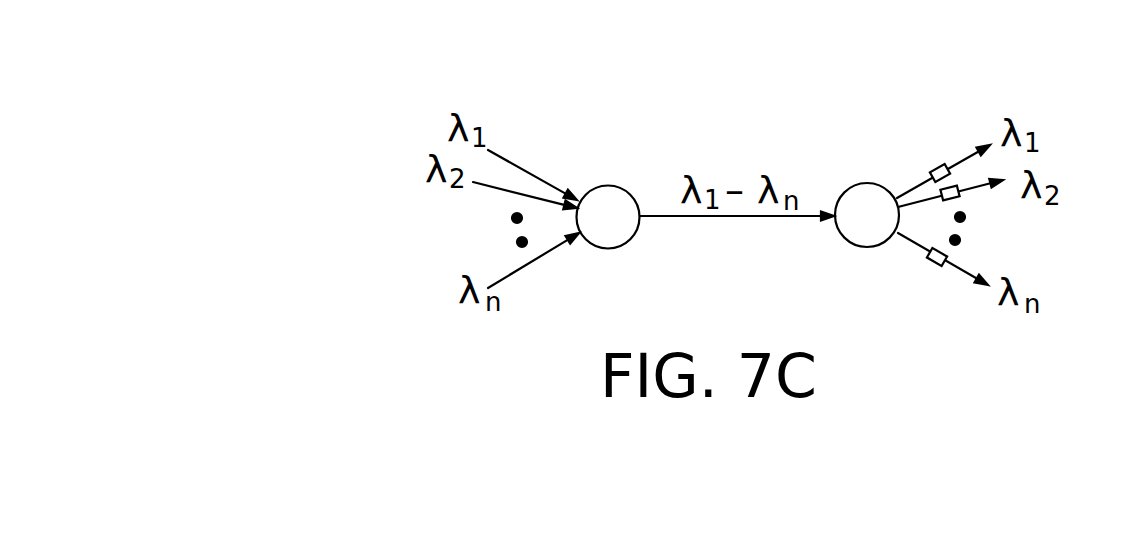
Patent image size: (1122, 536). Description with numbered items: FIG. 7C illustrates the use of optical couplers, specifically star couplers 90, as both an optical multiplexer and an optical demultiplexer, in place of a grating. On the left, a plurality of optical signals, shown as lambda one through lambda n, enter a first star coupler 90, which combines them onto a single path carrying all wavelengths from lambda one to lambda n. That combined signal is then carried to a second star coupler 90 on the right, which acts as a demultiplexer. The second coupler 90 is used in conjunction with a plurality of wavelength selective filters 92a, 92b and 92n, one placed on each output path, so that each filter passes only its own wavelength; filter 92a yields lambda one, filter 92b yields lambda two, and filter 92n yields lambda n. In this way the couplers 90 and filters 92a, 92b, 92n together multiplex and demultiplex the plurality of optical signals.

The optical coupler 90 is at (615, 184).
The wavelength selective filter 92a is at (935, 166).
The wavelength selective filter 92b is at (962, 198).
The wavelength selective filter 92n is at (926, 263).